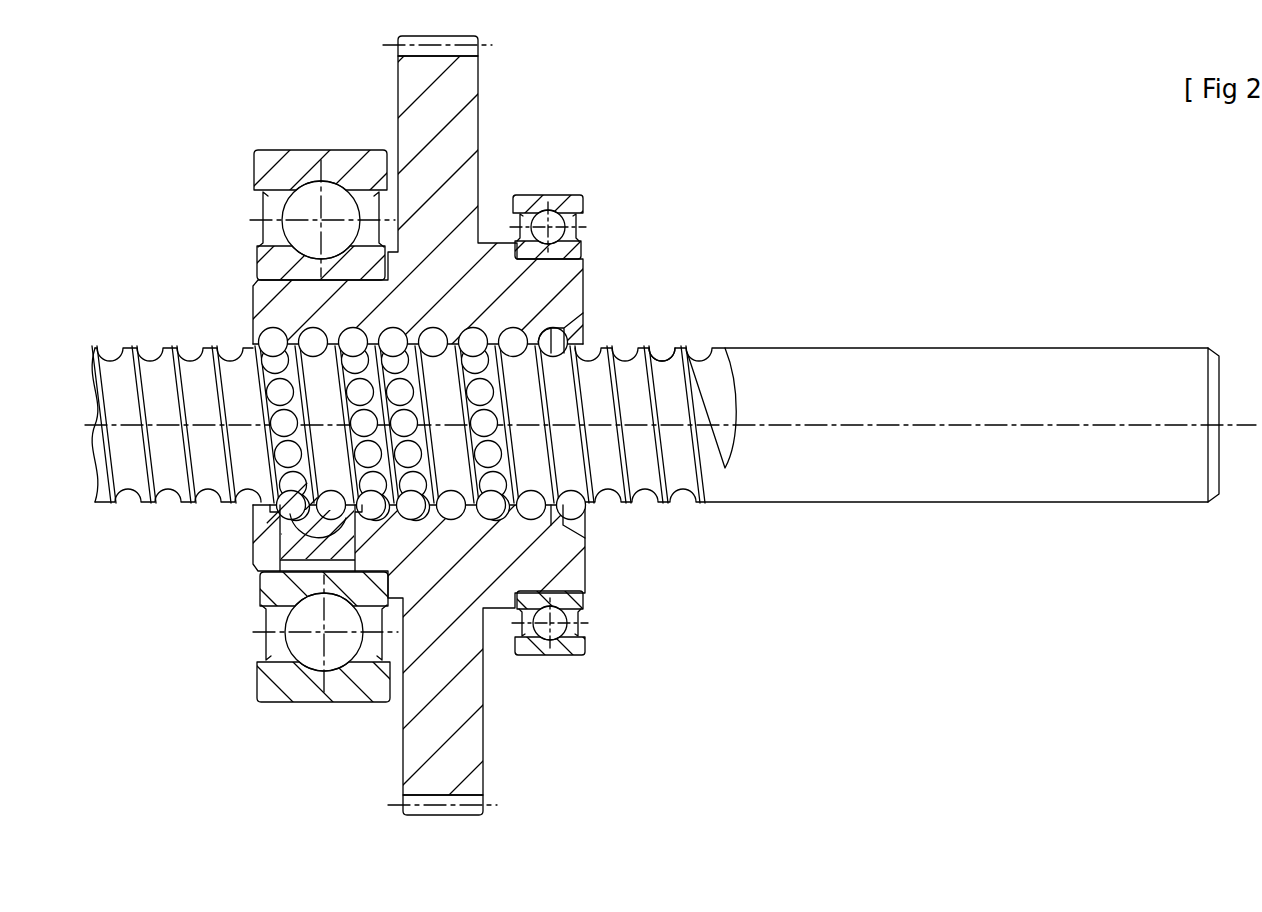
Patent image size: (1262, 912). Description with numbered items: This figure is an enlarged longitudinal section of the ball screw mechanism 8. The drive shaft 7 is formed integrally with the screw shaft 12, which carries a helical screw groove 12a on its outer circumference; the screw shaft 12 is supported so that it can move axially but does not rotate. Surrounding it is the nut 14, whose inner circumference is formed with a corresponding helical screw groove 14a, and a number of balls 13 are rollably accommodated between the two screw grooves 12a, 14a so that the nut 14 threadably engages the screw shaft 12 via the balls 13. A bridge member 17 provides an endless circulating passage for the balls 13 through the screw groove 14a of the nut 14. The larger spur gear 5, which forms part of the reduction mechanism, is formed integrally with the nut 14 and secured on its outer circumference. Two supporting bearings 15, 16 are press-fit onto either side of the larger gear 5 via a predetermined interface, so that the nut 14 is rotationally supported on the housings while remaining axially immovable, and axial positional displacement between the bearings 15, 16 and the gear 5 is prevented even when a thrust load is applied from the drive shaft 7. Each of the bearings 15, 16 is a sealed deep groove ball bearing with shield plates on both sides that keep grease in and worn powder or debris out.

The larger spur gear 5 is at (413, 87).
The drive shaft 7 is at (670, 392).
The ball screw mechanism 8 is at (631, 450).
The screw shaft 12 is at (655, 393).
The helical screw groove 12a is at (664, 350).
The balls 13 is at (355, 343).
The nut 14 is at (238, 307).
The helical screw groove 14a is at (532, 372).
The supporting bearing 15 is at (295, 173).
The supporting bearing 16 is at (530, 205).
The bridge member 17 is at (295, 549).